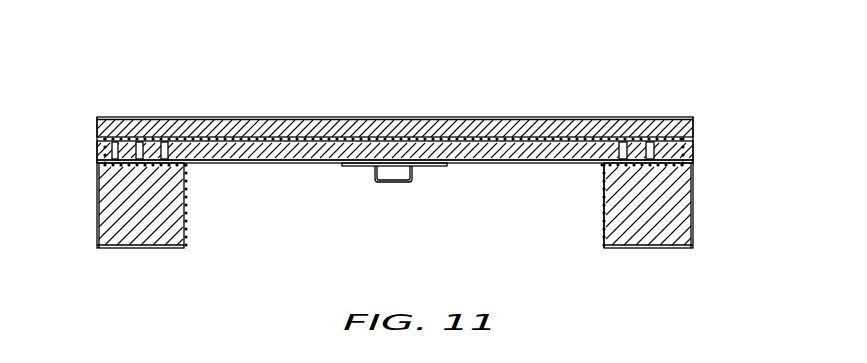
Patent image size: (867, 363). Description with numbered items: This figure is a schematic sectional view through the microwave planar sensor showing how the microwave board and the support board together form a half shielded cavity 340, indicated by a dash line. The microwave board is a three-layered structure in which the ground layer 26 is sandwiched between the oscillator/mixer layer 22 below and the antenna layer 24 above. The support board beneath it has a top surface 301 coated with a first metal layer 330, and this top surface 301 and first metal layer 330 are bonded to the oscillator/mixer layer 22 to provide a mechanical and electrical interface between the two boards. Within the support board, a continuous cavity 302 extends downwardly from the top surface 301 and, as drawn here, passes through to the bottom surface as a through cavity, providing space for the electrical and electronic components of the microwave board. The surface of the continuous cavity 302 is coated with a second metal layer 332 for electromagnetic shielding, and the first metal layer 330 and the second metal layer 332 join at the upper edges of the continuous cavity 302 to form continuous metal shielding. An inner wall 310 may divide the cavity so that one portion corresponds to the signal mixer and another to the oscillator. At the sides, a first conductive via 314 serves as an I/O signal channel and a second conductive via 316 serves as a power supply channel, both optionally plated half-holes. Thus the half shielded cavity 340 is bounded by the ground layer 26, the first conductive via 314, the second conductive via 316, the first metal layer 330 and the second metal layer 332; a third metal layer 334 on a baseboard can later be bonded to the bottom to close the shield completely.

The antenna layer 24 is at (94, 116).
The first conductive via 314 is at (110, 117).
The half shielded cavity 340 is at (268, 118).
The second conductive via 316 is at (694, 117).
The ground layer 26 is at (94, 140).
The oscillator/mixer layer 22 is at (94, 162).
The top surface 301 is at (94, 171).
The third metal layer 334 is at (110, 253).
The inner wall 310 is at (672, 218).
The second metal layer 332 is at (602, 197).
The continuous cavity 302 is at (565, 223).
The first metal layer 330 is at (695, 160).